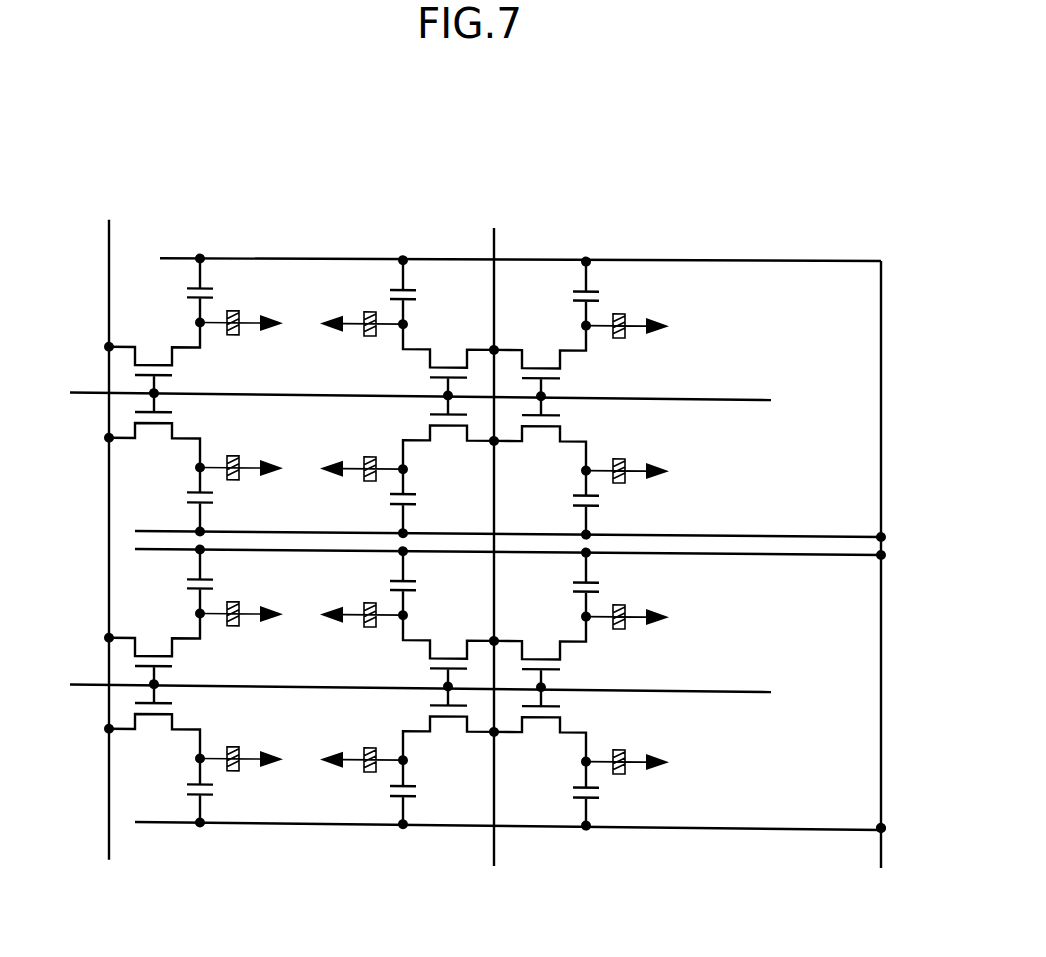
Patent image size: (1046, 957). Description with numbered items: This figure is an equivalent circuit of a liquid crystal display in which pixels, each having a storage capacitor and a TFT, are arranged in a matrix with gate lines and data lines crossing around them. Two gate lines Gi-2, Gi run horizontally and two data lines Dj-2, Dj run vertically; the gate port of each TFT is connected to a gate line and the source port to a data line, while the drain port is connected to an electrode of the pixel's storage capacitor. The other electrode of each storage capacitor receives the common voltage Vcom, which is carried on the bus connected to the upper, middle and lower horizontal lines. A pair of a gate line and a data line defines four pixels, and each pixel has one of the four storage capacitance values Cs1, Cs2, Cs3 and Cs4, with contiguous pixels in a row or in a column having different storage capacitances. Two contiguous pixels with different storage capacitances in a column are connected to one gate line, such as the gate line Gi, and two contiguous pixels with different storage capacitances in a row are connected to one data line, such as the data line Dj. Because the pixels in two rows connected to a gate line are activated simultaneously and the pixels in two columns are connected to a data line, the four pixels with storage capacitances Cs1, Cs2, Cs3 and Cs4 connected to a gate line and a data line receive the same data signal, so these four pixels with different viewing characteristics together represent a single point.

The data line Dj-2 is at (107, 524).
The data line Dj is at (493, 529).
The gate line Gi-2 is at (395, 396).
The gate line Gi is at (408, 687).
The common voltage Vcom is at (871, 580).
The storage capacitance Cs1 is at (426, 438).
The storage capacitance Cs2 is at (416, 437).
The storage capacitance Cs3 is at (426, 647).
The storage capacitance Cs4 is at (416, 646).